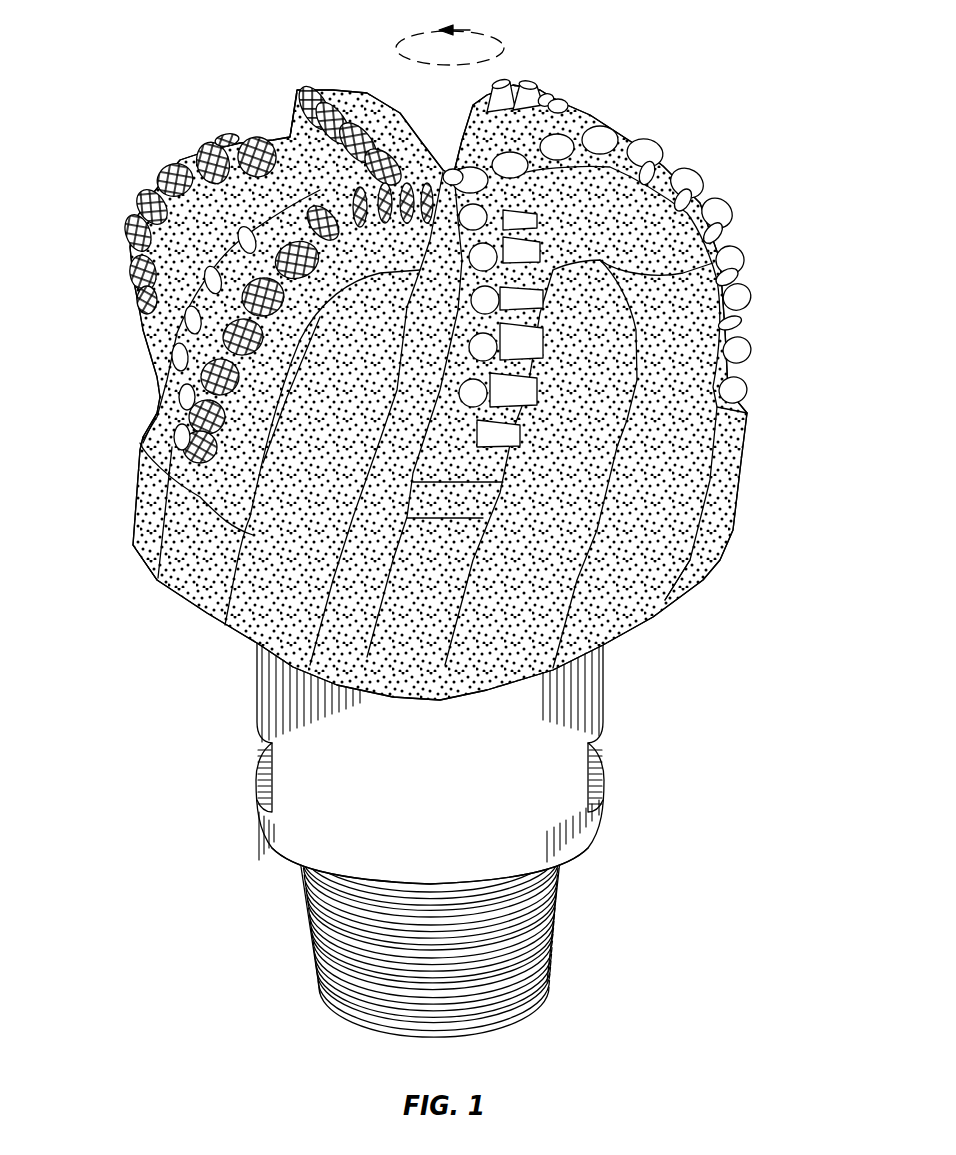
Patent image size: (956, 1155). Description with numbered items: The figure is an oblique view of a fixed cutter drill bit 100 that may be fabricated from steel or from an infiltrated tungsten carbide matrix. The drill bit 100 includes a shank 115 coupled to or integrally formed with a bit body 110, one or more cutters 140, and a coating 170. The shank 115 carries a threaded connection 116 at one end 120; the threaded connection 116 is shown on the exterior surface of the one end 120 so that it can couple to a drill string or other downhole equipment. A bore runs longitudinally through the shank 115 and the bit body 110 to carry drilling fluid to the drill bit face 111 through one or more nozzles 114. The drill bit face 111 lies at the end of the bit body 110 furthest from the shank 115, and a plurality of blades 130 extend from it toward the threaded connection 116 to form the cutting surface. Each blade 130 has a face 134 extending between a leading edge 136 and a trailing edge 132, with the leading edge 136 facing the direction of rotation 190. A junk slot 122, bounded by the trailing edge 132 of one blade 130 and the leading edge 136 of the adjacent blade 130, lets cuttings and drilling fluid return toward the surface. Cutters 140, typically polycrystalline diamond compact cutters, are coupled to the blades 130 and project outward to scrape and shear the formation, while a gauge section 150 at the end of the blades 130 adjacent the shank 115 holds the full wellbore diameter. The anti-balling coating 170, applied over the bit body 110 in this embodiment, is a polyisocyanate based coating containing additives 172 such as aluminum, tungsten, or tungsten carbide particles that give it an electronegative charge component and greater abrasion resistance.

The fixed cutter drill bit 100 is at (704, 63).
The bit body 110 is at (745, 505).
The drill bit face 111 is at (447, 172).
The nozzles 114 is at (682, 218).
The shank 115 is at (607, 674).
The threaded connection 116 is at (555, 886).
The one end 120 is at (558, 925).
The junk slot 122 is at (153, 463).
The blades 130 is at (735, 283).
The trailing edge 132 is at (697, 478).
The face 134 is at (430, 448).
The leading edge 136 is at (153, 565).
The cutters 140 is at (180, 178).
The gauge section 150 is at (143, 528).
The coating 170 is at (718, 255).
The additives 172 is at (680, 582).
The direction of rotation 190 is at (503, 48).